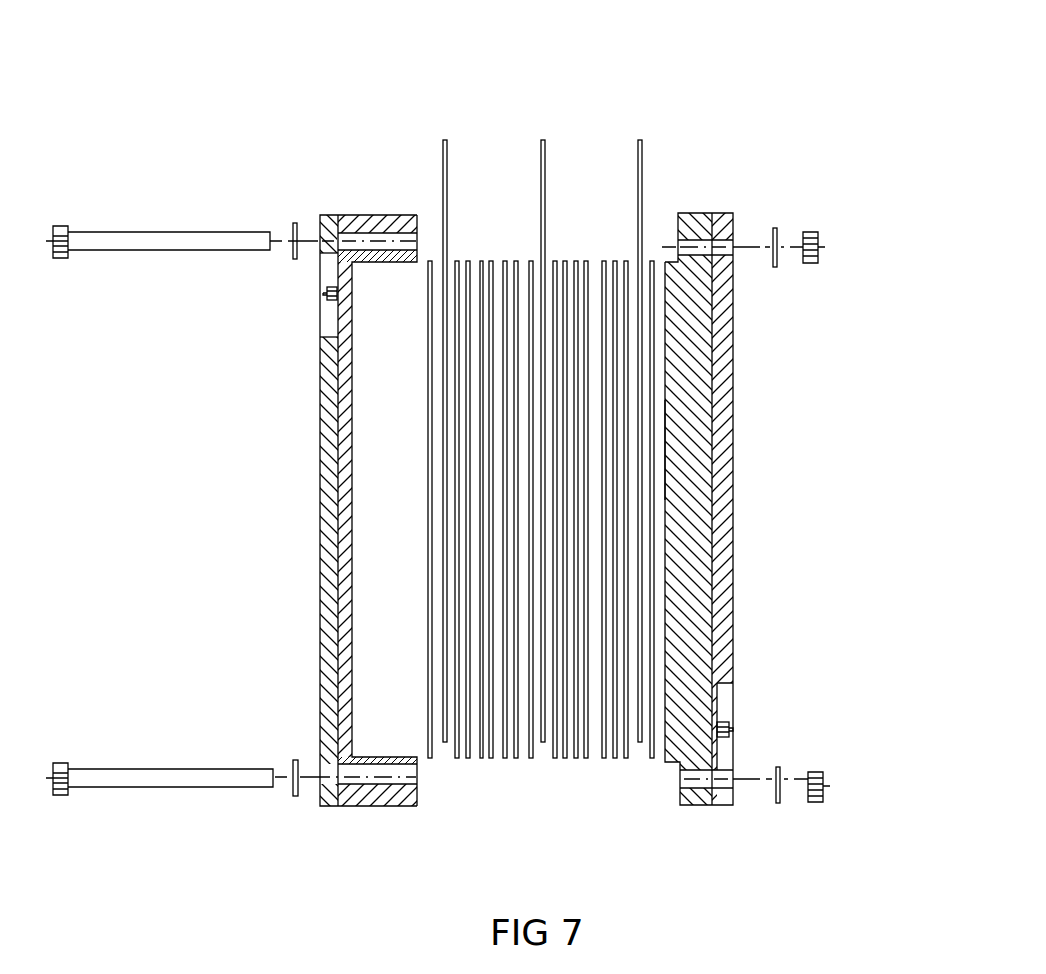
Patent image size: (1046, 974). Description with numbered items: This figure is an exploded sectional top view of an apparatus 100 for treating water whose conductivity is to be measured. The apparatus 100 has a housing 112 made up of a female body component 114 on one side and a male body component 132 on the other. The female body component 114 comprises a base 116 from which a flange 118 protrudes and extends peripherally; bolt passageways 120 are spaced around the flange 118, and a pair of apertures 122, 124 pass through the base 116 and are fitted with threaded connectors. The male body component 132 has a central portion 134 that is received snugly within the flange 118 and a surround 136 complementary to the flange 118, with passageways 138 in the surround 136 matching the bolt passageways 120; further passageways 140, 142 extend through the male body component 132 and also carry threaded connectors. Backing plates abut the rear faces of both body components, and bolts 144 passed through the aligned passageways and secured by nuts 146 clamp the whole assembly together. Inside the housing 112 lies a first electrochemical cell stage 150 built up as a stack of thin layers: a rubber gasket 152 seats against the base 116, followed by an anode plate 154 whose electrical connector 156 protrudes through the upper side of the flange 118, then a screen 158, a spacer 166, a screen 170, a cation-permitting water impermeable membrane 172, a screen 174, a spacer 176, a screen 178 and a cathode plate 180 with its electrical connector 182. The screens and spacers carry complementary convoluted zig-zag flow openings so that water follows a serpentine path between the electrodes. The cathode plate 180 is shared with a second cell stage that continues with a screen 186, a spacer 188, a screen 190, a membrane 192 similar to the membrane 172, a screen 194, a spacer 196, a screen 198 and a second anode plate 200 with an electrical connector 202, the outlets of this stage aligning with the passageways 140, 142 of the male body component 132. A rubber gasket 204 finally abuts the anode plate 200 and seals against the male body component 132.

The apparatus 100 is at (688, 78).
The housing 112 is at (373, 818).
The female body component 114 is at (357, 200).
The base 116 is at (349, 530).
The flange 118 is at (386, 222).
The bolt passageways 120 is at (388, 790).
The aperture 122 is at (273, 336).
The aperture 124 is at (324, 322).
The male body component 132 is at (683, 820).
The central portion 134 is at (700, 228).
The surround 136 is at (711, 238).
The passageways 138 is at (713, 250).
The passageway 140 is at (784, 807).
The passageway 142 is at (742, 772).
The bolts 144 is at (200, 772).
The nuts 146 is at (818, 770).
The first electrochemical cell stage 150 is at (487, 133).
The rubber gasket 152 is at (430, 592).
The anode plate 154 is at (445, 556).
The electrical connector 156 is at (443, 140).
The screen 158 is at (443, 760).
The spacer 166 is at (471, 758).
The screen 170 is at (481, 758).
The water impermeable membrane 172 is at (483, 261).
The screen 174 is at (505, 261).
The spacer 176 is at (516, 261).
The screen 178 is at (530, 261).
The cathode plate 180 is at (540, 260).
The electrical connector 182 is at (543, 150).
The screen 186 is at (565, 758).
The spacer 188 is at (571, 758).
The screen 190 is at (584, 758).
The membrane 192 is at (596, 758).
The screen 194 is at (605, 261).
The spacer 196 is at (616, 261).
The screen 198 is at (633, 261).
The anode plate 200 is at (640, 758).
The electrical connector 202 is at (641, 155).
The rubber gasket 204 is at (662, 445).